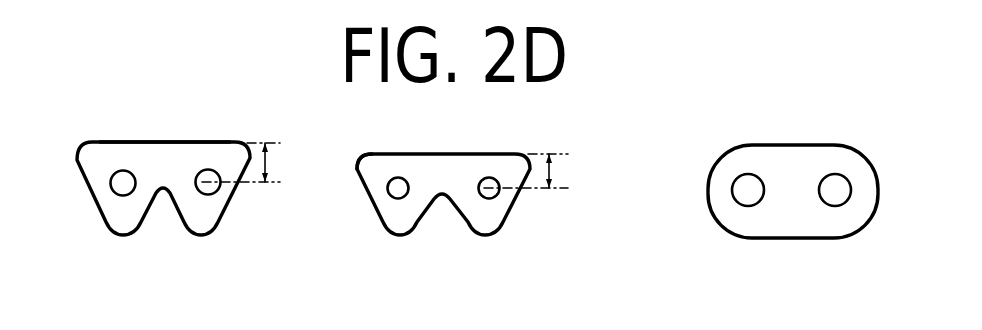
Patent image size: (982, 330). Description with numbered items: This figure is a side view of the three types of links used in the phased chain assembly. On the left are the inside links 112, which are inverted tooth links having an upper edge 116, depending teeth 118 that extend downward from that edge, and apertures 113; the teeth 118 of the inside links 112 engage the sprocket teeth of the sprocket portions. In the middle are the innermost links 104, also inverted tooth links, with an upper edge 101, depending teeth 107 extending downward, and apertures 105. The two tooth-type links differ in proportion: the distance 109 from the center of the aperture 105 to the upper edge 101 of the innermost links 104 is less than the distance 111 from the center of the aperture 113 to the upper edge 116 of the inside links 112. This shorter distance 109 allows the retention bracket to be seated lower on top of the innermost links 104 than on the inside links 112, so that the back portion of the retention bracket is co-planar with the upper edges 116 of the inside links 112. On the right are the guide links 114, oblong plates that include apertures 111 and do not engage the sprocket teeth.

The upper edge 101 is at (470, 154).
The innermost links 104 is at (373, 178).
The apertures 105 is at (488, 198).
The depending teeth 107 is at (390, 237).
The distance 109 is at (547, 171).
The distance / apertures 111 is at (832, 206).
The inside links 112 is at (98, 165).
The apertures 113 is at (200, 197).
The guide links 114 is at (723, 168).
The upper edge 116 is at (130, 142).
The depending teeth 118 is at (112, 238).